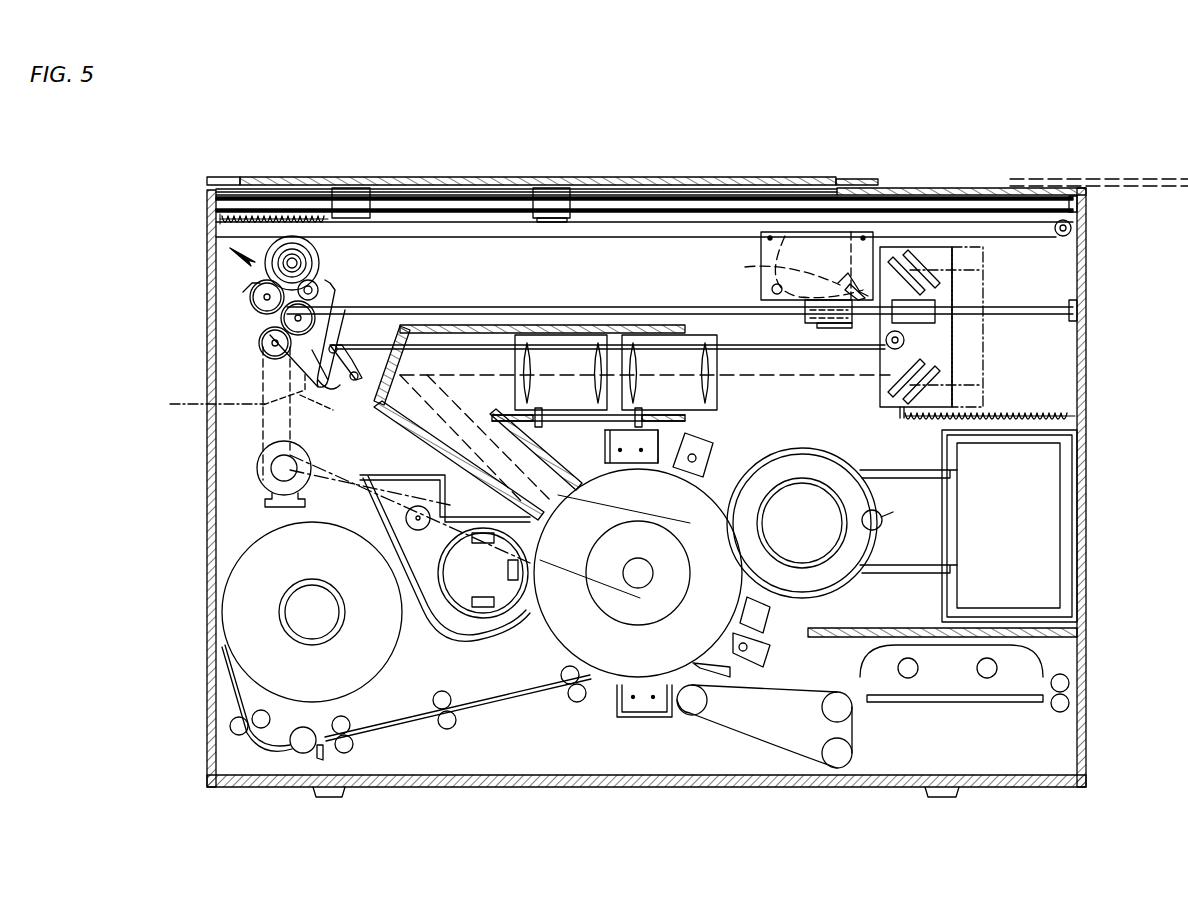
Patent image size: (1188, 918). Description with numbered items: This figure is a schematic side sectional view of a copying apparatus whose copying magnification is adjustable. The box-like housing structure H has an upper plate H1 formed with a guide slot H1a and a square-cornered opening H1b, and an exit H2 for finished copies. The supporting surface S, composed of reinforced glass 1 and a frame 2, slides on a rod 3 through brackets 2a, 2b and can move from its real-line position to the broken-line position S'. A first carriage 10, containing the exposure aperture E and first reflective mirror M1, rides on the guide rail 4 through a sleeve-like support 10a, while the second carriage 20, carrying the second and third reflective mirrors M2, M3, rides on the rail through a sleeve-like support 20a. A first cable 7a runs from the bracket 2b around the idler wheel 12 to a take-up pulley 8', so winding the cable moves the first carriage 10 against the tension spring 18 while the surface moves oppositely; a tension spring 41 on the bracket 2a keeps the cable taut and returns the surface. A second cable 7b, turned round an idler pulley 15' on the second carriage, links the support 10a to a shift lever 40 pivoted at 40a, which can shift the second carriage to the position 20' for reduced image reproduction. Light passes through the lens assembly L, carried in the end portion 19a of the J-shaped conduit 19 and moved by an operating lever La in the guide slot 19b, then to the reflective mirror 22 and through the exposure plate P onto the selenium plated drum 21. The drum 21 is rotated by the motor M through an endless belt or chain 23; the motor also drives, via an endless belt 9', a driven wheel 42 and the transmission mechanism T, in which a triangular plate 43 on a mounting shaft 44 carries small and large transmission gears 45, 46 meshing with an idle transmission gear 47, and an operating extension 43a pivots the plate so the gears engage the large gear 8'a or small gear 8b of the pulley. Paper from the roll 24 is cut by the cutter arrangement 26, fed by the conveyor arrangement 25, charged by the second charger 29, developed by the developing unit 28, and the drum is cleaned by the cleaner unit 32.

The frame 2 is at (217, 177).
The upper plate H1 is at (228, 194).
The guide slot H1a is at (650, 193).
The square-cornered opening H1b is at (288, 190).
The exit H2 is at (1086, 690).
The housing structure H is at (165, 354).
The bracket 2a is at (350, 200).
The bracket 2b is at (550, 200).
The supporting surface S is at (462, 158).
The second position of supporting surface S' is at (1099, 163).
The reinforced glass 1 is at (500, 185).
The rod 3 is at (597, 197).
The first carriage 10 is at (826, 232).
The exposure aperture E is at (858, 232).
The second carriage 20 is at (931, 279).
The idler wheel 12 is at (1072, 220).
The guide rail 4 is at (1040, 300).
The tension spring 18 is at (1040, 412).
The cleaner unit 32 is at (1103, 502).
The tension spring 41 is at (225, 215).
The transmission mechanism T is at (230, 248).
The large transmission gear 46 is at (250, 294).
The triangular plate 43 is at (250, 312).
The idle transmission gear 47 is at (258, 340).
The driven wheel 42 is at (262, 352).
The endless belt 9' is at (202, 405).
The operating extension 43a is at (300, 395).
The motor M is at (258, 478).
The endless belt or chain 23 is at (330, 505).
The roll of paper 24 is at (240, 612).
The cutter arrangement 26 is at (312, 752).
The small gear 8b is at (300, 258).
The take-up pulley 8' is at (311, 263).
The large gear 8'a is at (340, 267).
The small transmission gear 45 is at (318, 290).
The mounting shaft 44 is at (300, 320).
The shift lever 40 is at (355, 382).
The pivot of shift lever 40a is at (332, 390).
The reflective mirror 22 is at (380, 407).
The J-shaped conduit 19 is at (422, 426).
The exposure plate P is at (520, 500).
The first cable 7a is at (512, 237).
The end portion of conduit 19a is at (636, 323).
The guide slot 19b is at (605, 446).
The lens assembly L is at (717, 395).
The operating lever La is at (650, 420).
The first reflective mirror M1 is at (760, 265).
The sleeve-like support 10a is at (808, 316).
The second cable 7b is at (822, 350).
The idler pulley 15' is at (870, 367).
The second reflective mirror M2 is at (968, 265).
The sleeve-like support 20a is at (935, 320).
The third reflective mirror M3 is at (968, 361).
The shifted position of second carriage 20' is at (990, 329).
The conveyor arrangement 25 is at (435, 698).
The developing unit 28 is at (478, 610).
The selenium plated drum 21 is at (565, 620).
The second charger 29 is at (645, 717).